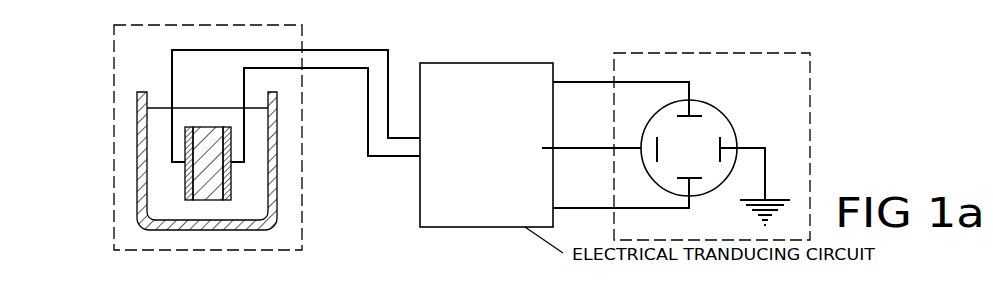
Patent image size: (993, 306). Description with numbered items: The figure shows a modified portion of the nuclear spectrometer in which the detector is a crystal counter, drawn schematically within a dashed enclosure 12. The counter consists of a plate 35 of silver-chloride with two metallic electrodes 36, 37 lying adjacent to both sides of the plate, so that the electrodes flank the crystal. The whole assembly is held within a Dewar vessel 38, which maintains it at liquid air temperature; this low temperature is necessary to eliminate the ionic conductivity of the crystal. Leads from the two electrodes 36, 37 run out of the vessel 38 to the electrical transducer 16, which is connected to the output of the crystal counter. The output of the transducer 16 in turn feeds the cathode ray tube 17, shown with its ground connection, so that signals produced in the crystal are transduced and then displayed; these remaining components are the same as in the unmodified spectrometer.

The transducer assembly (dashed enclosure) 12 is at (113, 73).
The Dewar vessel 38 is at (142, 142).
The metallic electrode 37 is at (185, 173).
The plate of silver-chloride 35 is at (208, 200).
The metallic electrode 36 is at (231, 173).
The electrical transducer 16 is at (502, 227).
The cathode ray tube 17 is at (809, 180).